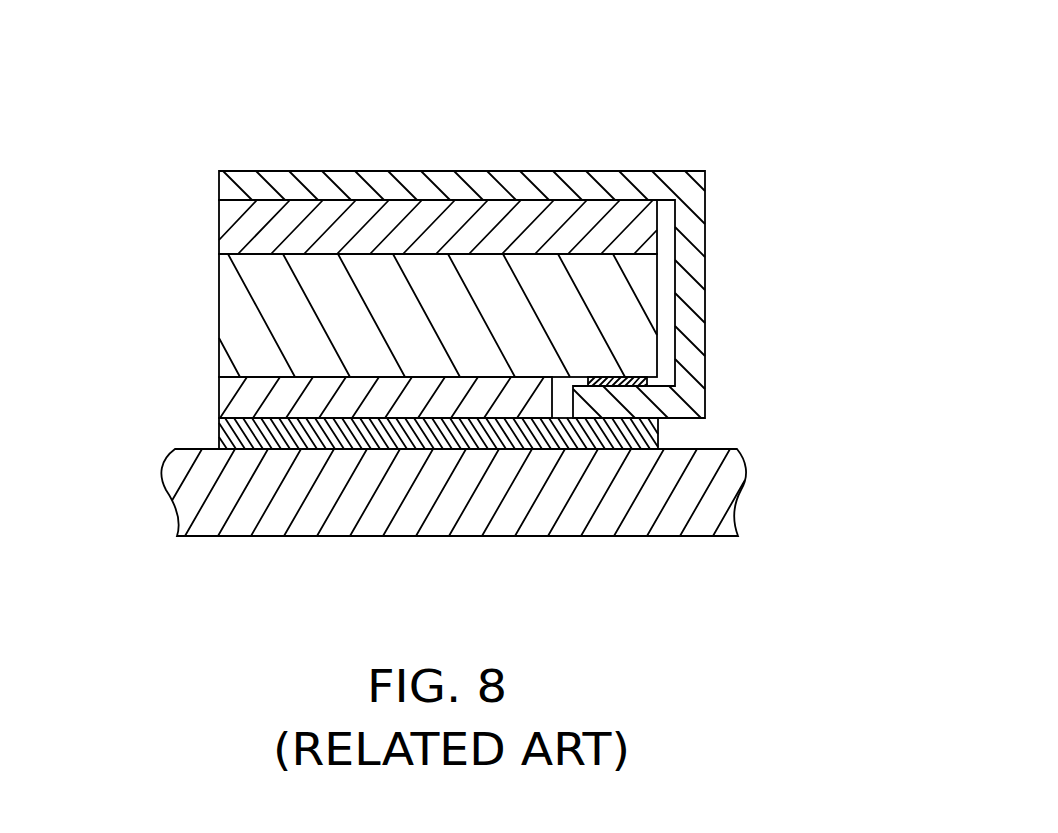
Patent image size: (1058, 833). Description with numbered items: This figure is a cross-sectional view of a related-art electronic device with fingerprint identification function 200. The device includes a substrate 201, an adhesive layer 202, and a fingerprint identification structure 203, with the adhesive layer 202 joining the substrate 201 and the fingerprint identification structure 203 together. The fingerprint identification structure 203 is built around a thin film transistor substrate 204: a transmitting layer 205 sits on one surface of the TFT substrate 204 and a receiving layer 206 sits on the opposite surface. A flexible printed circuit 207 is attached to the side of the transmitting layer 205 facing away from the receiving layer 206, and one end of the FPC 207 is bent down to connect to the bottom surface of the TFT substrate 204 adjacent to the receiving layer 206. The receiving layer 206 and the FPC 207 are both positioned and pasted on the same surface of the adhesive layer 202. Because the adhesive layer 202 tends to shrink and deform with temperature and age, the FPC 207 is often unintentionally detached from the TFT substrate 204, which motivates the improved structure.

The electronic device with fingerprint identification function 200 is at (483, 57).
The substrate 201 is at (663, 508).
The adhesive layer 202 is at (227, 430).
The fingerprint identification structure 203 is at (103, 193).
The thin film transistor (TFT) substrate 204 is at (240, 305).
The transmitting layer 205 is at (237, 228).
The receiving layer 206 is at (233, 397).
The flexible printed circuit (FPC) 207 is at (610, 182).